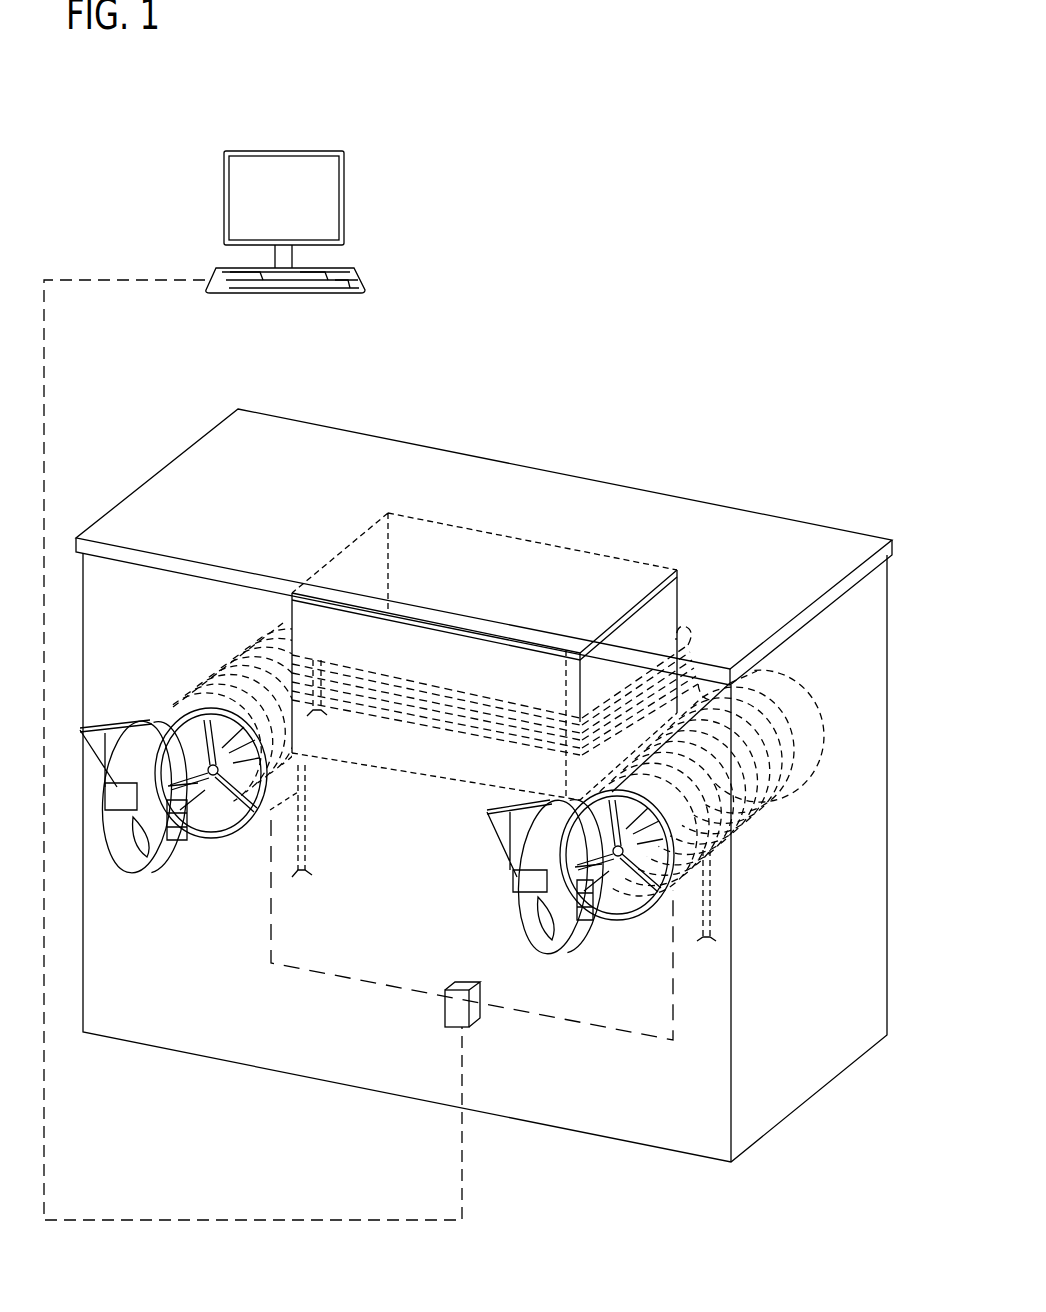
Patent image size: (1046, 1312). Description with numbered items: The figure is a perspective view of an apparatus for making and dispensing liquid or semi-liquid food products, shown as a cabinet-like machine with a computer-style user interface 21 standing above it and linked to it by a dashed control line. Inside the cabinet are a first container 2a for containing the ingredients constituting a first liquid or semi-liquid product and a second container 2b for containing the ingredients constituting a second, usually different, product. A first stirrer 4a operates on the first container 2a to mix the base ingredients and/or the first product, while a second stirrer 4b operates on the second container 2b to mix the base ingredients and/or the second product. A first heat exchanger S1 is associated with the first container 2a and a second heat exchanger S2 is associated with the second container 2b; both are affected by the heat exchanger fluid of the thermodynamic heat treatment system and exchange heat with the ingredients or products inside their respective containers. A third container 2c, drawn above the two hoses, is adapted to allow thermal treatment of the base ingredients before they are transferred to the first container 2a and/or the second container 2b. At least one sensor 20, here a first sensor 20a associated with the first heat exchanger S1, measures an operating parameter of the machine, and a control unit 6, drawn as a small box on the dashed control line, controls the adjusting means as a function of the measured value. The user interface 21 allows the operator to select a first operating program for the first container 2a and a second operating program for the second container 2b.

The user interface 21 is at (366, 193).
The first container 2a is at (234, 652).
The second container 2b is at (805, 688).
The third container 2c is at (530, 567).
The sensor 20 is at (175, 847).
The first sensor 20a is at (211, 773).
The first stirrer 4a is at (271, 809).
The second stirrer 4b is at (677, 893).
The first heat exchanger S1 is at (304, 775).
The second heat exchanger S2 is at (702, 904).
The control unit 6 is at (444, 1010).